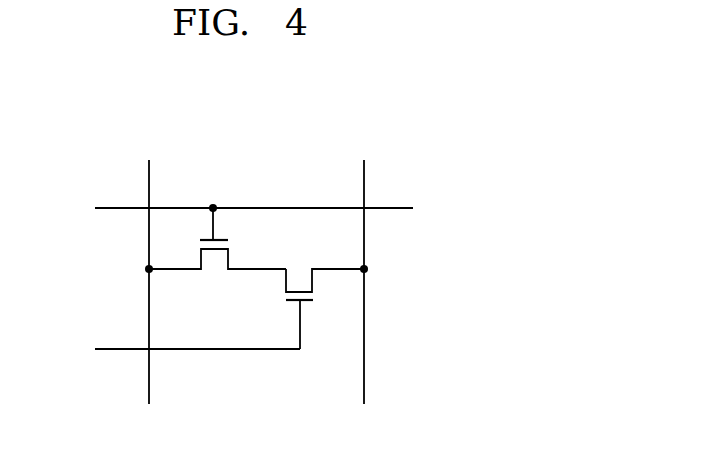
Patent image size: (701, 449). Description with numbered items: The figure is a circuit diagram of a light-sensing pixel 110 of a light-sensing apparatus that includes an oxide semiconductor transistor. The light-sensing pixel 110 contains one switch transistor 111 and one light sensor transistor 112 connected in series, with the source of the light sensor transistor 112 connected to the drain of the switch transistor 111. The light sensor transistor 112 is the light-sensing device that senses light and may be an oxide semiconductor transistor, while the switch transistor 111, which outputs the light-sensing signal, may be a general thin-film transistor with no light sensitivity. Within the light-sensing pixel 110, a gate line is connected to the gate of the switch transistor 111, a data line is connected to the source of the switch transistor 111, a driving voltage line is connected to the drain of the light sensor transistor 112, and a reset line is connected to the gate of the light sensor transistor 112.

The light-sensing pixel 110 is at (276, 259).
The switch transistor 111 is at (212, 283).
The light sensor transistor 112 is at (320, 315).